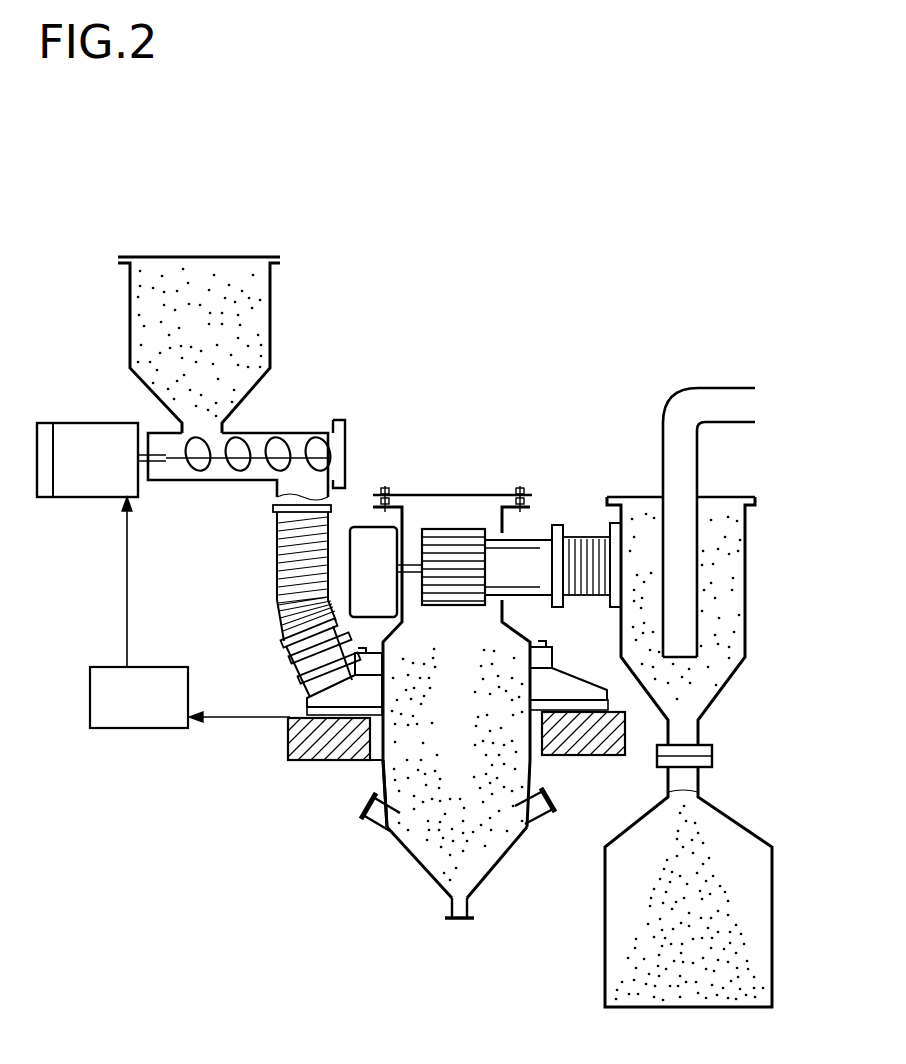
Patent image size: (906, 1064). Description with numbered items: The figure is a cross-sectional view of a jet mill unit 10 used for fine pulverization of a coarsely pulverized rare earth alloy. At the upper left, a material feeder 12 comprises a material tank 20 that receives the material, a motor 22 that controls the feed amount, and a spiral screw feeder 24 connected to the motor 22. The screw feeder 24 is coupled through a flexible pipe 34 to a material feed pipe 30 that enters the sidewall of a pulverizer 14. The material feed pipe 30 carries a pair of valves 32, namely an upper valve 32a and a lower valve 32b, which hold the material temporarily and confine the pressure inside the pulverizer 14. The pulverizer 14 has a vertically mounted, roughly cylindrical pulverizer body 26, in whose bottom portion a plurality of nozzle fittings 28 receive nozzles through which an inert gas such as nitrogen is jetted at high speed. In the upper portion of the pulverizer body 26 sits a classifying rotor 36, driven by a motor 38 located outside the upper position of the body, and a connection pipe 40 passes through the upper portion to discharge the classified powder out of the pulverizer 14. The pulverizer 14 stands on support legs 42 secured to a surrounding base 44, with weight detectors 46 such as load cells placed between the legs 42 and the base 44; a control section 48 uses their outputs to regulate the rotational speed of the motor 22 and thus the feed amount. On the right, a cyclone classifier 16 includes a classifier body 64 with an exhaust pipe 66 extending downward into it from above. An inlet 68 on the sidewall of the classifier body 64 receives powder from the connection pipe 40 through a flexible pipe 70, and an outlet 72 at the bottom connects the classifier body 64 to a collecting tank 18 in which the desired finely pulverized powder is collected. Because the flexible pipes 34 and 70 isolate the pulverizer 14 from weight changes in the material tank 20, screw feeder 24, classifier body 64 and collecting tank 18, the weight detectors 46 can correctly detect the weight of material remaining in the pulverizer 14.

The jet mill unit 10 is at (148, 161).
The material feeder 12 is at (318, 322).
The pulverizer 14 is at (350, 896).
The cyclone classifier 16 is at (748, 600).
The collecting tank 18 is at (595, 928).
The material tank 20 is at (130, 337).
The motor 22 is at (84, 487).
The spiral screw feeder 24 is at (205, 475).
The pulverizer body 26 is at (417, 867).
The nozzle fittings 28 is at (373, 830).
The material feed pipe 30 is at (370, 790).
The pair of valves 32 is at (246, 663).
The upper valve 32a is at (297, 655).
The lower valve 32b is at (313, 673).
The flexible pipe 34 is at (275, 578).
The classifying rotor 36 is at (457, 537).
The motor 38 is at (390, 540).
The connection pipe 40 is at (527, 537).
The support legs 42 is at (293, 712).
The base 44 is at (352, 752).
The weight detectors 46 is at (305, 750).
The control section 48 is at (166, 720).
The classifier body 64 is at (745, 565).
The exhaust pipe 66 is at (710, 418).
The inlet 68 is at (620, 523).
The flexible pipe 70 is at (577, 517).
The outlet 72 is at (700, 737).